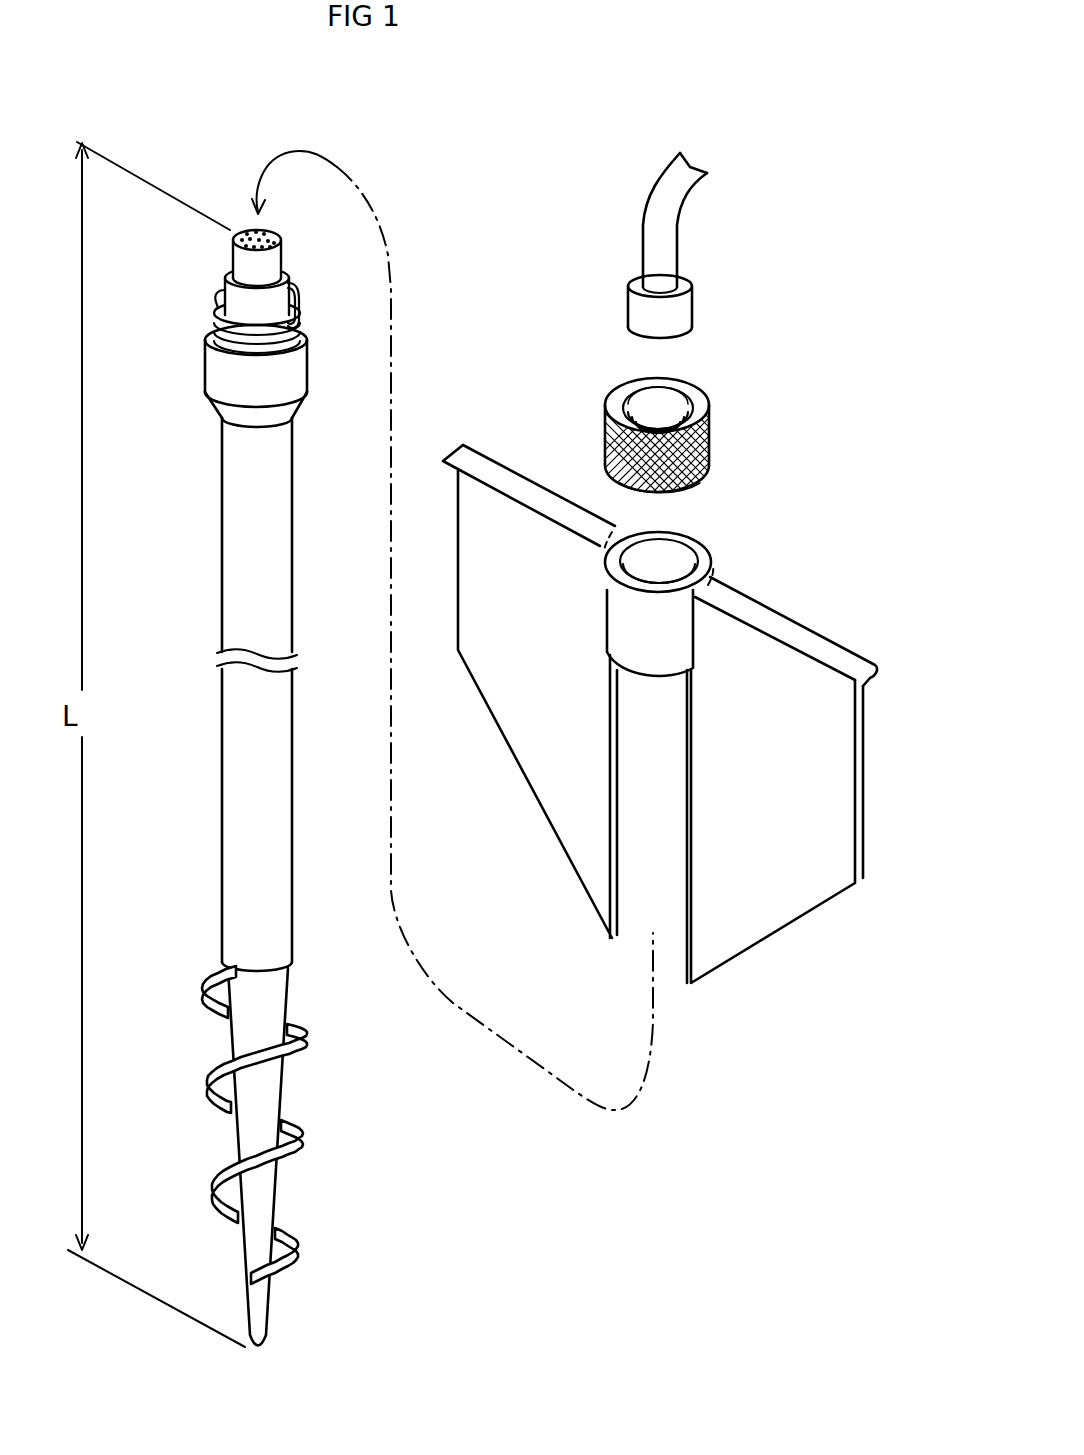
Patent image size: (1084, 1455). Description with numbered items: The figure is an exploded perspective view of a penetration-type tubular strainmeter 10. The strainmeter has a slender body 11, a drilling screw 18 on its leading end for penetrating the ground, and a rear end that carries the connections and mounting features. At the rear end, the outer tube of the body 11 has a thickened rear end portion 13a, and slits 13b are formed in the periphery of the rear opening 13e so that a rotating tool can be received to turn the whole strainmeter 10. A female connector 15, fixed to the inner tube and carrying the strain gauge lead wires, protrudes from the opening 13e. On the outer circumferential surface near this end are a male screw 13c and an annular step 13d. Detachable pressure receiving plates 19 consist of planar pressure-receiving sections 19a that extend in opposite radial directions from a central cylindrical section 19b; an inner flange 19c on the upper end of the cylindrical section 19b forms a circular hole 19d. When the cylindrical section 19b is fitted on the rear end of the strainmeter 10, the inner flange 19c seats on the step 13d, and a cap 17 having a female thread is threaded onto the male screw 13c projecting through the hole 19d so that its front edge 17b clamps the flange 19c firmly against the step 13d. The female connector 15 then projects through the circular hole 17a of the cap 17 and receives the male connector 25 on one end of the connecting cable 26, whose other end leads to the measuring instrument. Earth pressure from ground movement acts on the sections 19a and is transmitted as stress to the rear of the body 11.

The tubular strainmeter 10 is at (200, 533).
The body 11 is at (228, 820).
The rear end portion 13a is at (217, 368).
The slits 13b is at (302, 317).
The male screw 13c is at (225, 313).
The annular step 13d is at (283, 350).
The opening 13e is at (290, 283).
The female connector 15 is at (247, 230).
The cap 17 is at (667, 425).
The circular hole 17a is at (640, 390).
The front edge 17b is at (637, 492).
The drilling screw 18 is at (271, 1200).
The pressure receiving plates 19 is at (696, 722).
The planar pressure-receiving sections 19a is at (518, 763).
The cylindrical section 19b is at (682, 625).
The inner flange 19c is at (708, 558).
The circular hole 19d is at (667, 560).
The male connector 25 is at (633, 310).
The connecting cable 26 is at (647, 208).